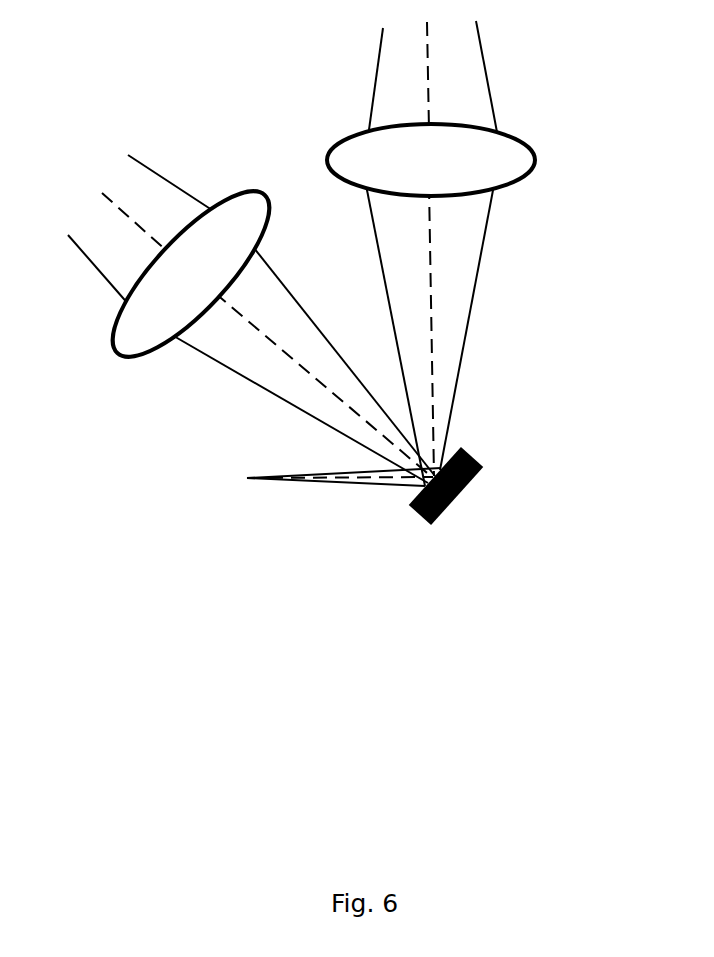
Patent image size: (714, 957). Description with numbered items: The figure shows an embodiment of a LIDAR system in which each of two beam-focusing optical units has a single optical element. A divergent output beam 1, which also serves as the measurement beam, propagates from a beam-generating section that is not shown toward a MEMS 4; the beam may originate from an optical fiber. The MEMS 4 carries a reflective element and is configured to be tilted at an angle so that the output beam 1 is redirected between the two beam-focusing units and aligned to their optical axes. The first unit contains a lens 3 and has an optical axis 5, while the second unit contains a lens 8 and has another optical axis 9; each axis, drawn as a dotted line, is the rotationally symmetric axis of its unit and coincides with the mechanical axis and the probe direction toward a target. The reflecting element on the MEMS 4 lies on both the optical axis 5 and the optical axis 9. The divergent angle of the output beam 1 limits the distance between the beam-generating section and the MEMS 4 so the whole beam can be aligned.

The divergent output beam 1 is at (341, 488).
The lens 3 is at (113, 362).
The MEMS 4 is at (473, 496).
The optical axis 5 is at (117, 220).
The lens 8 is at (545, 172).
The optical axis 9 is at (439, 33).